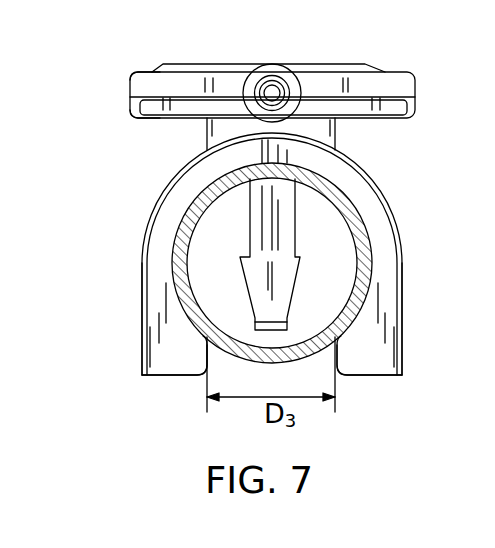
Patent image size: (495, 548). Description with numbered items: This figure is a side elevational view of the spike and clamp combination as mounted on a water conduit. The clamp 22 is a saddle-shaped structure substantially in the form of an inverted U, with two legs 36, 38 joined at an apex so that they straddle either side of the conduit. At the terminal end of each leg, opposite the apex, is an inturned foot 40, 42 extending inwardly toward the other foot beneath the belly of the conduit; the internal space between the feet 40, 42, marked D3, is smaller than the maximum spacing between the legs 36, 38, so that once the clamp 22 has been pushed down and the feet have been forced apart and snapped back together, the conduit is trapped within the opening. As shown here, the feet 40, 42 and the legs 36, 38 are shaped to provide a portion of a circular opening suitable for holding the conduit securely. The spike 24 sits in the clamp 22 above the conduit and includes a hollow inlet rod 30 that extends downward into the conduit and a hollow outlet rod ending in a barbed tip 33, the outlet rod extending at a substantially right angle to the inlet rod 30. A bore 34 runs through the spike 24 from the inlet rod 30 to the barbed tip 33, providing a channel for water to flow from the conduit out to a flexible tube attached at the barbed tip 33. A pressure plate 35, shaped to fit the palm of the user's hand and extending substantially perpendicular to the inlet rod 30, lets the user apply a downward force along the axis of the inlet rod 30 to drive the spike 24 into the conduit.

The clamp 22 is at (167, 177).
The spike 24 is at (329, 90).
The inlet rod 30 is at (295, 222).
The barbed tip 33 is at (283, 72).
The bore 34 is at (270, 90).
The pressure plate 35 is at (146, 88).
The leg 36 is at (403, 250).
The leg 38 is at (153, 262).
The inturned foot 40 is at (165, 375).
The inturned foot 42 is at (375, 362).